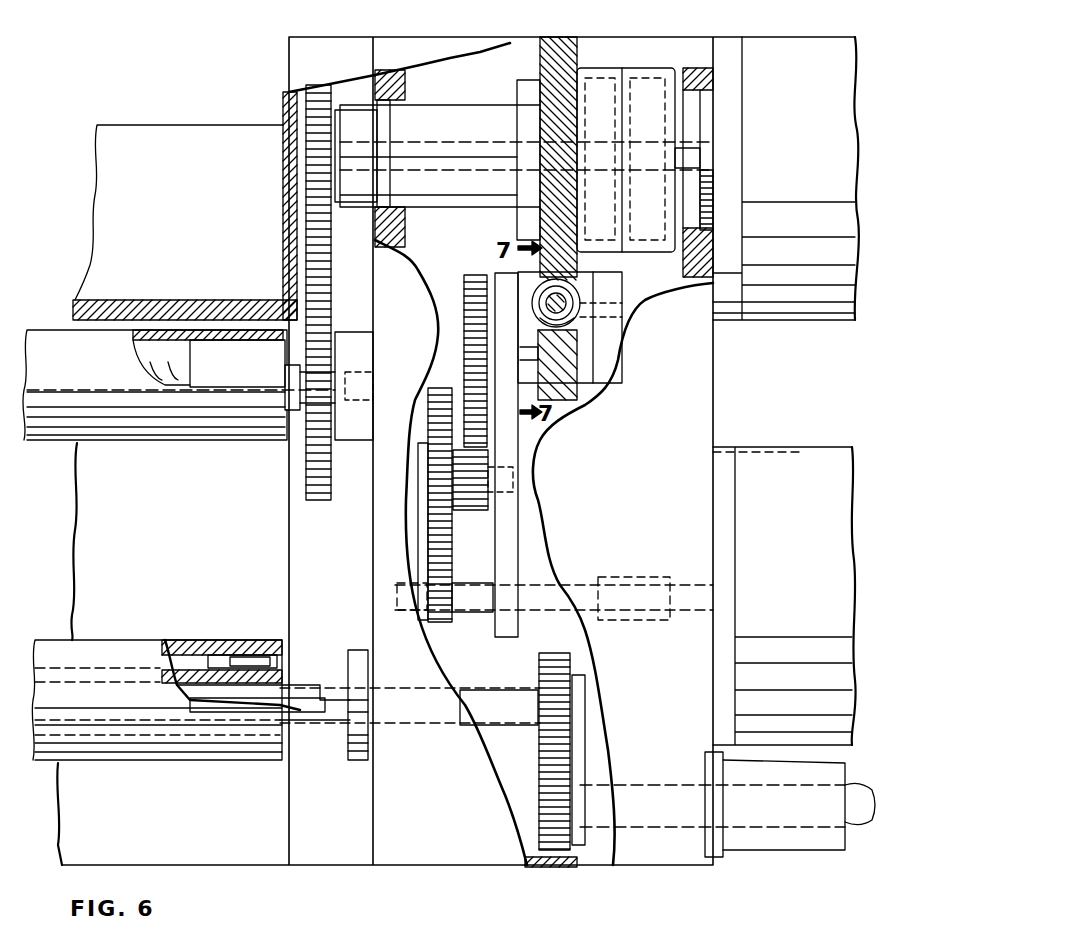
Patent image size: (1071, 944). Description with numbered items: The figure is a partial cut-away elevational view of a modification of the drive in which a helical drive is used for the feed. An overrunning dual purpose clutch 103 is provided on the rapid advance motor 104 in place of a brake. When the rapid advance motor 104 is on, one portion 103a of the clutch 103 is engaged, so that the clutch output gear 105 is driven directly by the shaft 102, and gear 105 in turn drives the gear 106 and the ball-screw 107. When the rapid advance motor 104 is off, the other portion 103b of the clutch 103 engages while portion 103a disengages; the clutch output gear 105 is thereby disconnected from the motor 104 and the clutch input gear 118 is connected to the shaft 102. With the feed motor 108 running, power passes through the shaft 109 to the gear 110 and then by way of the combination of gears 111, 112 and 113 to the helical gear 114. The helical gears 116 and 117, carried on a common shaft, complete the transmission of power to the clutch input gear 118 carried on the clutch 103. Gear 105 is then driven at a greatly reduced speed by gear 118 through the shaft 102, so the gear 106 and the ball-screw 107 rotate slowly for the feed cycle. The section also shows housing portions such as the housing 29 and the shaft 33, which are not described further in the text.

The input shaft housing 29 is at (208, 680).
The output shaft 33 is at (855, 822).
The shaft 102 is at (468, 140).
The overrunning dual purpose clutch 103 is at (619, 63).
The clutch portion 103a is at (690, 68).
The clutch portion 103b is at (576, 68).
The rapid advance motor 104 is at (785, 320).
The clutch output gear 105 is at (306, 228).
The gear 106 is at (331, 305).
The ball-screw 107 is at (232, 330).
The feed motor 108 is at (776, 447).
The shaft 109 is at (542, 610).
The gear 110 is at (443, 612).
The gear 111 is at (428, 548).
The gear 112 is at (482, 507).
The gear 113 is at (463, 300).
The helical gear 114 is at (576, 393).
The helical gear 116 is at (586, 320).
The helical gear 117 is at (580, 298).
The clutch input gear 118 is at (540, 64).